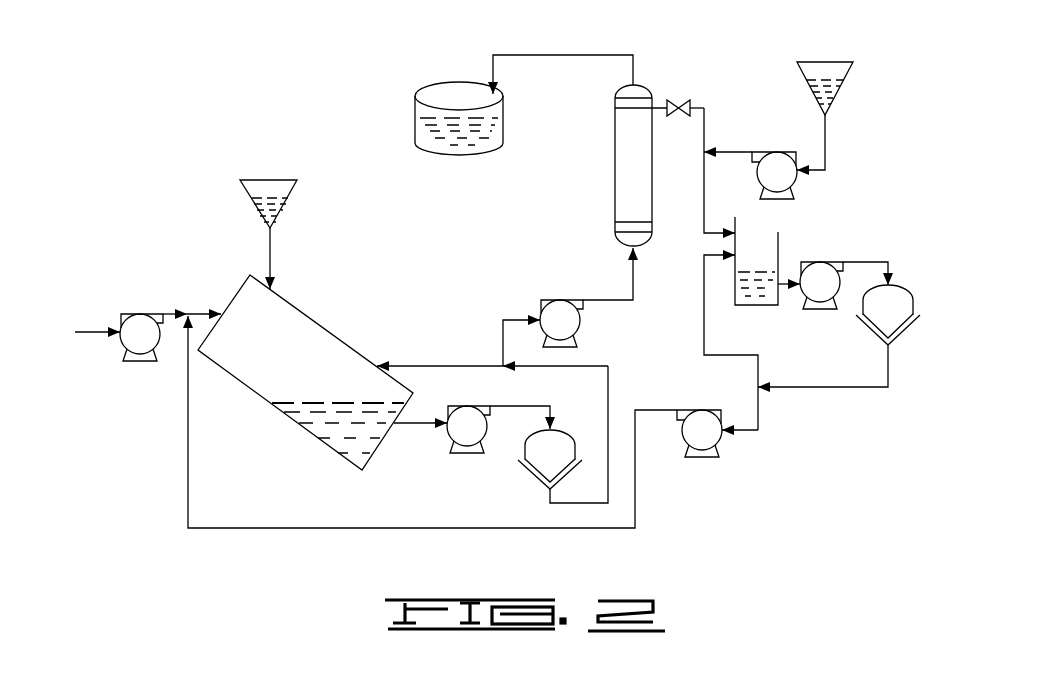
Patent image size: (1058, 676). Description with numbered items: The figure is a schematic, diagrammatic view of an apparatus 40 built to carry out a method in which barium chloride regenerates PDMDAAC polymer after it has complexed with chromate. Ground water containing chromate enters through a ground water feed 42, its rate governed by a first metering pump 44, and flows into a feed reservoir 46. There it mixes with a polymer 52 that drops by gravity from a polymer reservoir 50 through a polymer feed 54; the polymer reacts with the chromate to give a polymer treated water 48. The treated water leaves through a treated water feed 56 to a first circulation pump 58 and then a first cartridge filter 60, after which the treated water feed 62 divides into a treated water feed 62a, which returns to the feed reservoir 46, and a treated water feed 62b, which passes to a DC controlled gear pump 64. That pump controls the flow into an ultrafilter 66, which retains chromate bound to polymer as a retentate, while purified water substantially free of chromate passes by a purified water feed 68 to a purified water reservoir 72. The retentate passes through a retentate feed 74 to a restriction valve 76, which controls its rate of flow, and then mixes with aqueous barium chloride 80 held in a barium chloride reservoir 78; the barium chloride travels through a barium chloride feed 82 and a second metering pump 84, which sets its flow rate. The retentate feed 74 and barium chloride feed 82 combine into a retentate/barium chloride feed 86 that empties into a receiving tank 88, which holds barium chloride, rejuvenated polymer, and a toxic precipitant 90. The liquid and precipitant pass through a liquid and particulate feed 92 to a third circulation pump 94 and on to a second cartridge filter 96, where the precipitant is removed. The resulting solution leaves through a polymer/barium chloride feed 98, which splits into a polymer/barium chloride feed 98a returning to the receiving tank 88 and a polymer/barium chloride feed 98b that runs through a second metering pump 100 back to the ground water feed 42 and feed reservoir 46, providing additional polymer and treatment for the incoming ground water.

The apparatus 40 is at (355, 105).
The ground water feed 42 is at (87, 336).
The first metering pump 44 is at (130, 314).
The feed reservoir 46 is at (324, 327).
The polymer treated water 48 is at (346, 400).
The polymer reservoir 50 is at (260, 180).
The polymer 52 is at (253, 197).
The polymer feed 54 is at (271, 253).
The treated water feed 56 is at (422, 420).
The first circulation pump 58 is at (487, 445).
The first cartridge filter 60 is at (573, 440).
The treated water feed 62 is at (608, 398).
The treated water feed 62a is at (458, 365).
The treated water feed 62b is at (502, 325).
The DC controlled gear pump 64 is at (553, 298).
The ultrafilter 66 is at (615, 190).
The purified water feed 68 is at (557, 55).
The purified water reservoir 72 is at (437, 83).
The retentate feed 74 is at (660, 106).
The restriction valve 76 is at (696, 107).
The barium chloride reservoir 78 is at (818, 63).
The aqueous barium chloride 80 is at (834, 82).
The barium chloride feed 82 is at (826, 145).
The second metering pump 84 is at (797, 182).
The retentate/barium chloride feed 86 is at (703, 195).
The receiving tank 88 is at (742, 305).
The liquid and toxic precipitant 90 is at (757, 270).
The liquid and particulate feed 92 is at (787, 278).
The third circulation pump 94 is at (840, 261).
The second cartridge filter 96 is at (912, 315).
The polymer/barium chloride feed 98 is at (889, 362).
The polymer/barium chloride feed 98a is at (704, 333).
The polymer/barium chloride feed 98b is at (758, 413).
The second metering pump 100 is at (720, 447).